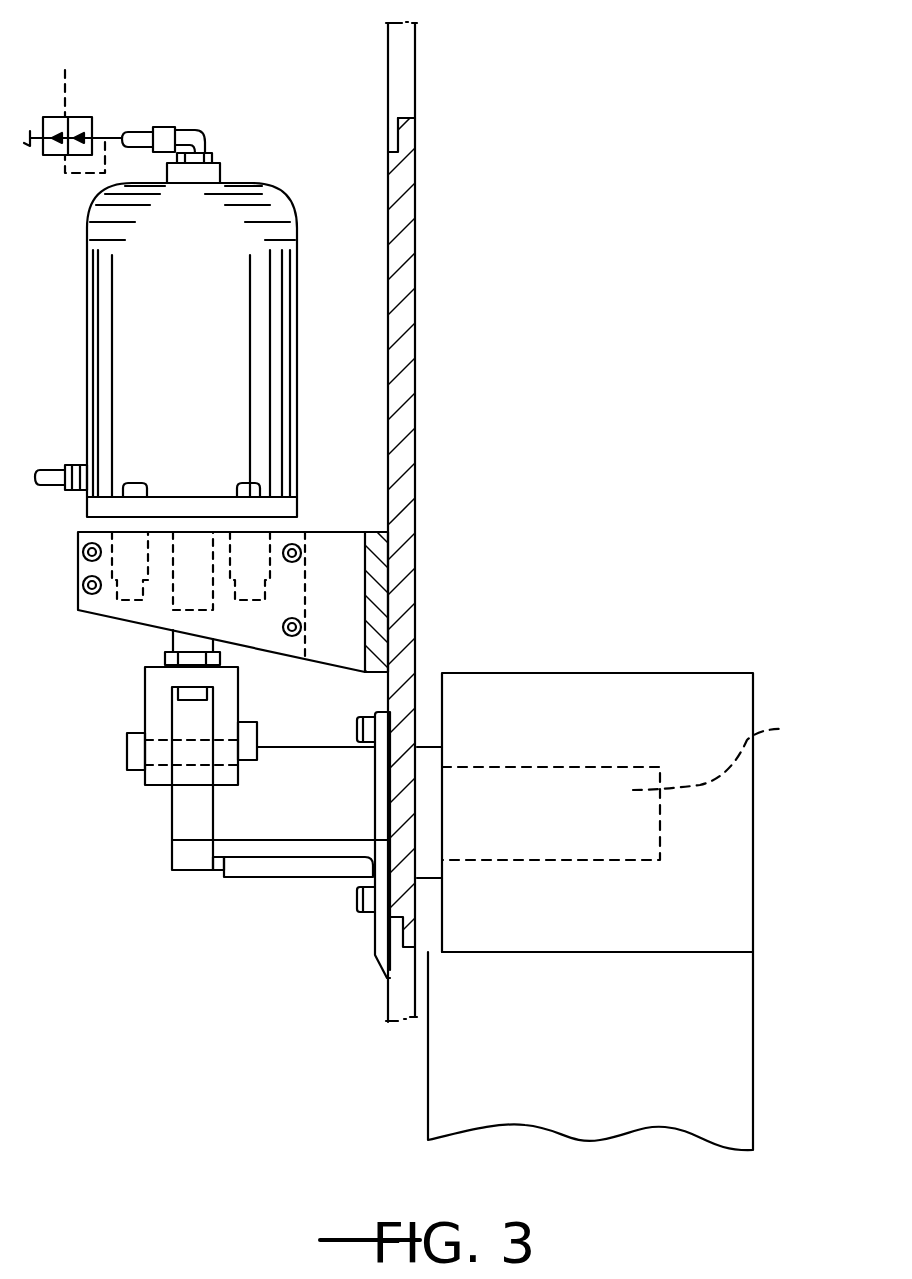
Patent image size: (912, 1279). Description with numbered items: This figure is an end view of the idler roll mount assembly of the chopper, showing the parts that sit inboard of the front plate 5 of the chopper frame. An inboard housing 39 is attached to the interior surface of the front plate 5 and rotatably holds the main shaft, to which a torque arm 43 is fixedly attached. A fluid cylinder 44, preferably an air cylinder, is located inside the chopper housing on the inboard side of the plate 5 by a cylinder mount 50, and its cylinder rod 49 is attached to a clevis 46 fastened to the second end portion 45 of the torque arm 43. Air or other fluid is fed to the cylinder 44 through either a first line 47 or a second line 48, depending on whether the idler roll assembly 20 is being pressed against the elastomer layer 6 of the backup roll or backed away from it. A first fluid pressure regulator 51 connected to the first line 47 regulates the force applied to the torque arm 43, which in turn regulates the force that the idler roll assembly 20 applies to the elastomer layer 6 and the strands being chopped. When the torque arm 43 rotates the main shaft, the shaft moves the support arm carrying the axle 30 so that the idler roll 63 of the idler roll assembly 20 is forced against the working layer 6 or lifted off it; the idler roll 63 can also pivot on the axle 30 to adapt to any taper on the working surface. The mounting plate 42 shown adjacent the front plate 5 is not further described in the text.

The front plate 5 is at (415, 55).
The mounting plate 42 is at (400, 305).
The fluid cylinder 44 is at (104, 276).
The first fluid pressure regulator 51 is at (86, 117).
The first line 47 is at (138, 128).
The second line 48 is at (52, 468).
The cylinder rod 49 is at (185, 580).
The cylinder mount 50 is at (66, 574).
The clevis 46 is at (156, 693).
The second end portion 45 is at (196, 722).
The inboard housing 39 is at (313, 806).
The torque arm 43 is at (188, 815).
The idler roll assembly 20 is at (697, 666).
The axle 30 is at (625, 796).
The idler roll 63 is at (710, 917).
The elastomer layer 6 is at (715, 1055).